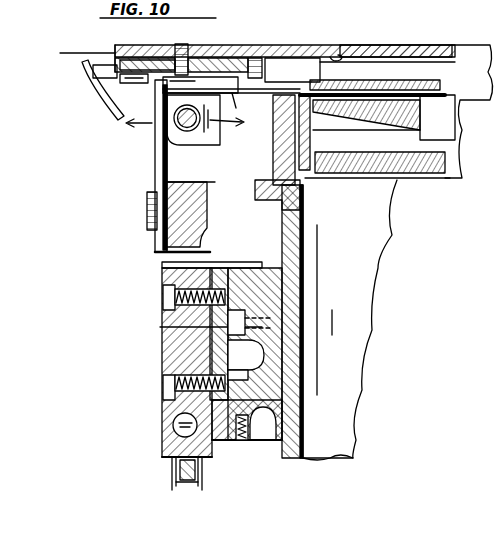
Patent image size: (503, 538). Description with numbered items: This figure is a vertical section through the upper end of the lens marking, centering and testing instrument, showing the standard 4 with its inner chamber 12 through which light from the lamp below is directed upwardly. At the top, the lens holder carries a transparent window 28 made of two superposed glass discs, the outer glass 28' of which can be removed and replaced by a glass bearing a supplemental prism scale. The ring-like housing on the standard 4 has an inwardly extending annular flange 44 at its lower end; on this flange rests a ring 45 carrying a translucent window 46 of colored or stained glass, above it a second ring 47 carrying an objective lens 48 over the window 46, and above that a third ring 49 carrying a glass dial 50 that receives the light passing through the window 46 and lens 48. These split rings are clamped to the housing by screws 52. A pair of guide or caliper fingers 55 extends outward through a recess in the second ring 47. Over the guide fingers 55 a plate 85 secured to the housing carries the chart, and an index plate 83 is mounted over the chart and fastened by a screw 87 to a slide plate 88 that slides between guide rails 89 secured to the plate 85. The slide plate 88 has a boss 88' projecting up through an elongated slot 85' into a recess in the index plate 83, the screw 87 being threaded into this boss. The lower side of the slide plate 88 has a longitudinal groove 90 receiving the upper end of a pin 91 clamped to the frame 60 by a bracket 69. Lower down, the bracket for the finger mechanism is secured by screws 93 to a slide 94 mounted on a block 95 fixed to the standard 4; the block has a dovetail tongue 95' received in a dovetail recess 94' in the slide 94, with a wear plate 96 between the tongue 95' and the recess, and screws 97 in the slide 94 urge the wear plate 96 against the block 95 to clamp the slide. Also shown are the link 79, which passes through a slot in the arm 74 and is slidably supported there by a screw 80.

The inner chamber 12 is at (70, 43).
The index plate 83 is at (115, 50).
The elongated slot 85' is at (147, 45).
The screw 87 is at (182, 44).
The boss 88' is at (242, 49).
The screws 52 is at (340, 57).
The transparent window 28 is at (396, 38).
The outer glass 28' is at (469, 100).
The standard 4 is at (357, 293).
The plate 85 is at (83, 75).
The guide rails 89 is at (104, 94).
The slide plate 88 is at (134, 92).
The groove 90 is at (226, 82).
The second ring 47 is at (273, 132).
The ring 45 is at (273, 157).
The third ring 49 is at (358, 80).
The dial 50 is at (440, 92).
The guide fingers 55 is at (412, 110).
The objective lens 48 is at (437, 120).
The annular flange 44 is at (308, 182).
The translucent window 46 is at (418, 173).
The pin 91 is at (155, 170).
The bracket 69 is at (147, 212).
The frame 60 is at (207, 228).
The slide 94 is at (212, 319).
The screws 93 is at (165, 296).
The dovetail recess 94' is at (195, 330).
The block 95 is at (281, 354).
The dovetail tongue 95' is at (310, 321).
The link 79 is at (175, 480).
The arm 74 is at (186, 488).
The screw 80 is at (198, 487).
The screws 97 is at (241, 441).
The wear plate 96 is at (265, 443).